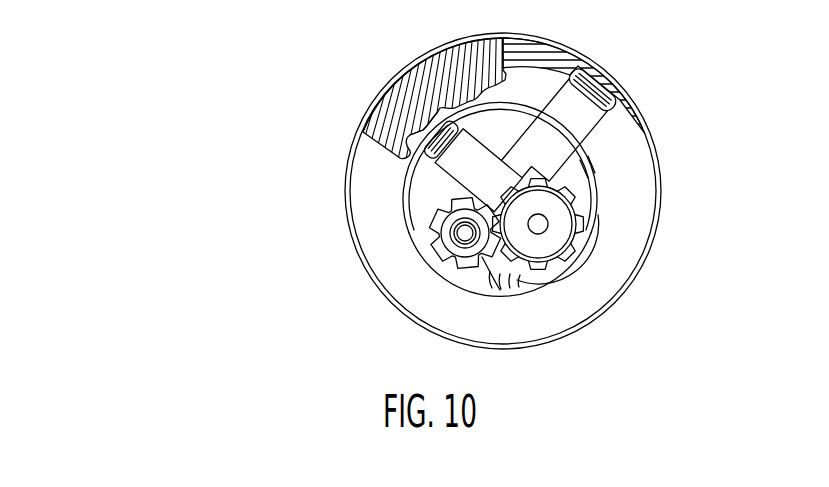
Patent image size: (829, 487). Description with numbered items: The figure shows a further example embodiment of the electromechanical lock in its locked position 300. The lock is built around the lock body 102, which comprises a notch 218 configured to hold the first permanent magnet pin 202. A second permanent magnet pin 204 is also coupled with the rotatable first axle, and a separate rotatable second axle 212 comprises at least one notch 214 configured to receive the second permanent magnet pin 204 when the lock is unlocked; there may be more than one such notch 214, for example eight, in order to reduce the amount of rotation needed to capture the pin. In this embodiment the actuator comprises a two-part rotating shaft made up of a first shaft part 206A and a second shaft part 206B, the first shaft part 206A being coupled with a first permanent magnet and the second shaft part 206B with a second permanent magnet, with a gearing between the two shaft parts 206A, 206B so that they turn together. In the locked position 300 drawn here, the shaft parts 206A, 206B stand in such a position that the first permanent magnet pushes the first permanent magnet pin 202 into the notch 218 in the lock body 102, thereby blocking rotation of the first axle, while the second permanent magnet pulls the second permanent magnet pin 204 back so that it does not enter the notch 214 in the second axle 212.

The locked position 300 is at (150, 139).
The lock body 102 is at (540, 48).
The first permanent magnet pin 202 is at (573, 127).
The second permanent magnet pin 204 is at (463, 168).
The first shaft part 206A is at (433, 242).
The second shaft part 206B is at (557, 233).
The second axle 212 is at (450, 58).
The notch 214 is at (430, 118).
The notch 218 is at (575, 72).